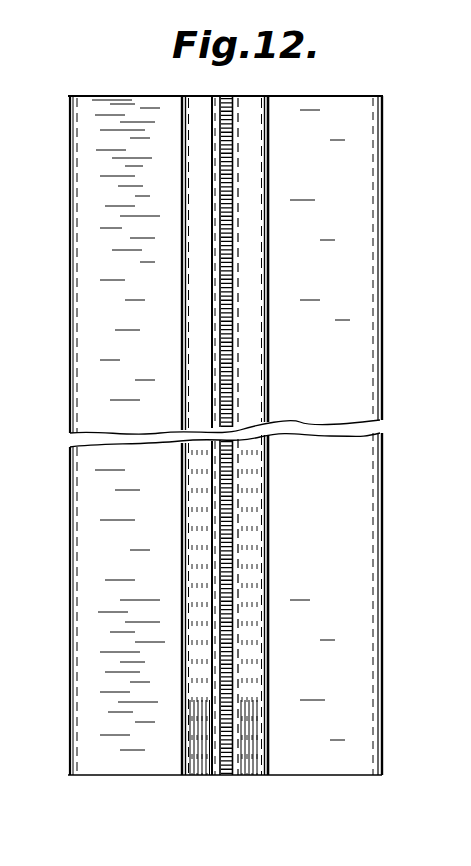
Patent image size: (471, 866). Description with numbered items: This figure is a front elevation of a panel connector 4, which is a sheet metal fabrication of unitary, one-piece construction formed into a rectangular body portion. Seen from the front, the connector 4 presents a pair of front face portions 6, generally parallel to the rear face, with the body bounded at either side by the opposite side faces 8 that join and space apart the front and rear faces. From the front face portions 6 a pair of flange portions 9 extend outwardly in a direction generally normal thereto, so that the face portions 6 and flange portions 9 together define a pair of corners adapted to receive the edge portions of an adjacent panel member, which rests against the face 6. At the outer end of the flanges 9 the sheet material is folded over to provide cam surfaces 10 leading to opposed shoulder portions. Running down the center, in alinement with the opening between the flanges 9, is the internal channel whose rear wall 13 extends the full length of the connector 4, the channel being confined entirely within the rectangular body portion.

The panel connector 4 is at (139, 89).
The front face 6 is at (336, 371).
The side face 8 is at (70, 683).
The flange portion 9 is at (182, 730).
The cam surface 10 is at (194, 340).
The rear wall 13 is at (225, 770).